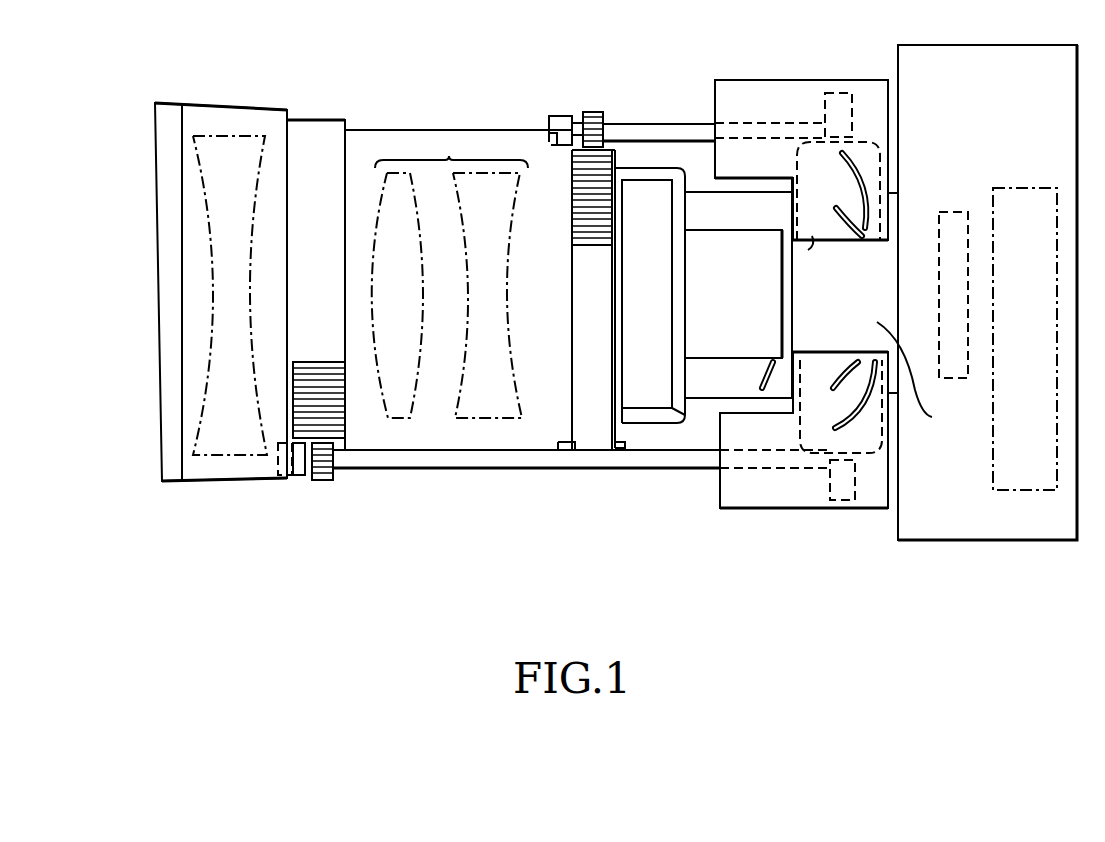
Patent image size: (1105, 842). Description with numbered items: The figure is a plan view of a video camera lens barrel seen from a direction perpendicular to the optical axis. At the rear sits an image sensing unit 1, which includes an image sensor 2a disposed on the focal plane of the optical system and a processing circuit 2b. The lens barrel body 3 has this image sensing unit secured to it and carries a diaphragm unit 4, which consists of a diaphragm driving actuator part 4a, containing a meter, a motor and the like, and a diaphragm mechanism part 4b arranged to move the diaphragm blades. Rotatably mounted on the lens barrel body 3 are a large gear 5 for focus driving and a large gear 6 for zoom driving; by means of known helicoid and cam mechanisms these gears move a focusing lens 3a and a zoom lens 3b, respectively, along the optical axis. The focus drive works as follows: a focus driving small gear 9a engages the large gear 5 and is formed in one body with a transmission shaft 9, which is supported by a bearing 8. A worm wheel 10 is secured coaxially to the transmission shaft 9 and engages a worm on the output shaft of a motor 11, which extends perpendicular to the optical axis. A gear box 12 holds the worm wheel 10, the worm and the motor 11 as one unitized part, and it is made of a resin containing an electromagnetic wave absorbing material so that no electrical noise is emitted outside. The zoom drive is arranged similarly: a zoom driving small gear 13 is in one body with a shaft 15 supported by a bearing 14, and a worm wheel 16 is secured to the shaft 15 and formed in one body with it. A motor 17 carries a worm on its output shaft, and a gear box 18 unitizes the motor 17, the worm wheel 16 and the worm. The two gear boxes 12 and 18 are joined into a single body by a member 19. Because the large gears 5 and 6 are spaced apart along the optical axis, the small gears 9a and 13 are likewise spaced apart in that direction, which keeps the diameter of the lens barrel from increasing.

The image sensing unit 1 is at (946, 532).
The image sensor 2a is at (952, 212).
The processing circuit 2b is at (1015, 188).
The lens barrel body 3 is at (480, 140).
The focusing lens 3a is at (237, 133).
The zoom lens 3b is at (447, 158).
The diaphragm unit 4 is at (648, 190).
The diaphragm driving actuator part 4a is at (775, 300).
The diaphragm mechanism part 4b is at (643, 390).
The large gear for focus driving 5 is at (348, 420).
The large gear for zoom driving 6 is at (573, 205).
The bearing 8 is at (298, 478).
The transmission shaft 9 is at (436, 460).
The focus driving small gear 9a is at (322, 481).
The worm wheel 10 is at (835, 505).
The motor 11 is at (818, 372).
The gear box 12 is at (740, 497).
The zoom driving small gear 13 is at (593, 112).
The bearing 14 is at (562, 120).
The shaft 15 is at (672, 125).
The worm wheel 16 is at (836, 93).
The motor 17 is at (809, 257).
The gear box 18 is at (760, 87).
The member 19 is at (920, 377).